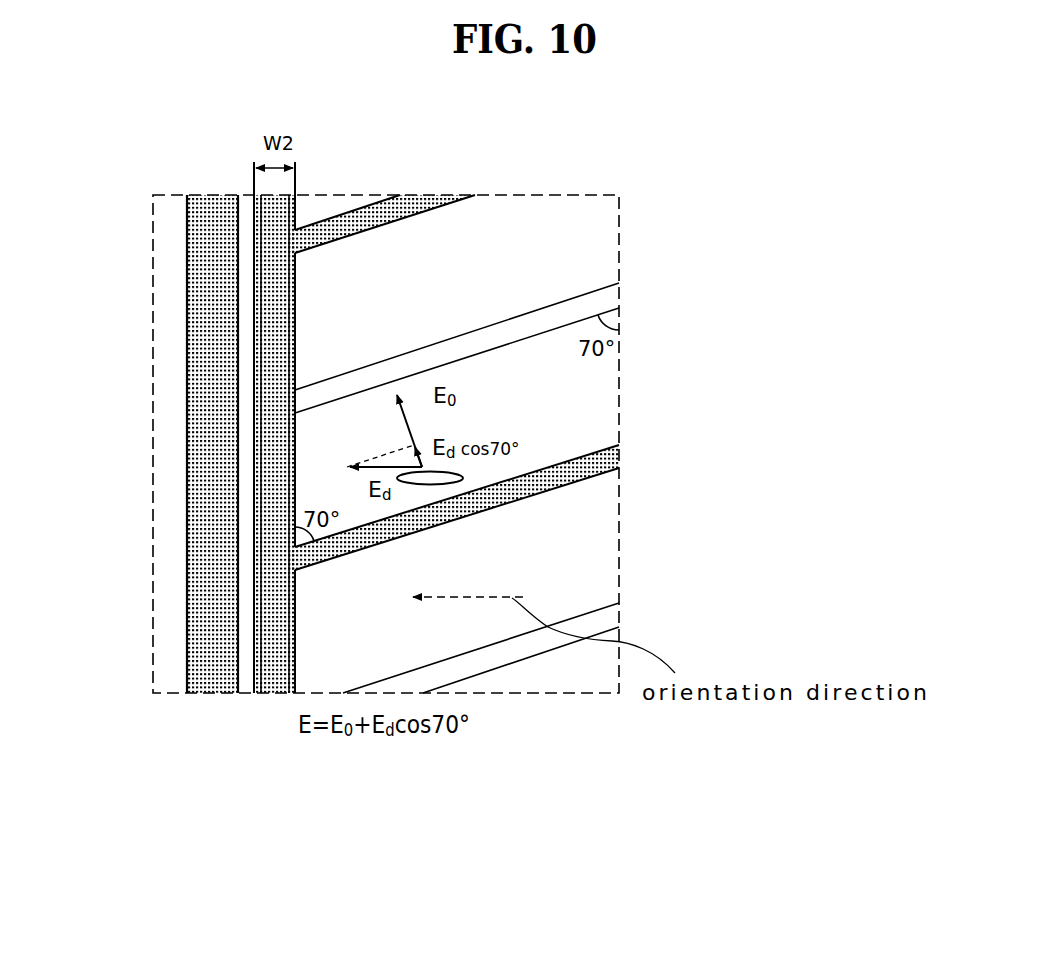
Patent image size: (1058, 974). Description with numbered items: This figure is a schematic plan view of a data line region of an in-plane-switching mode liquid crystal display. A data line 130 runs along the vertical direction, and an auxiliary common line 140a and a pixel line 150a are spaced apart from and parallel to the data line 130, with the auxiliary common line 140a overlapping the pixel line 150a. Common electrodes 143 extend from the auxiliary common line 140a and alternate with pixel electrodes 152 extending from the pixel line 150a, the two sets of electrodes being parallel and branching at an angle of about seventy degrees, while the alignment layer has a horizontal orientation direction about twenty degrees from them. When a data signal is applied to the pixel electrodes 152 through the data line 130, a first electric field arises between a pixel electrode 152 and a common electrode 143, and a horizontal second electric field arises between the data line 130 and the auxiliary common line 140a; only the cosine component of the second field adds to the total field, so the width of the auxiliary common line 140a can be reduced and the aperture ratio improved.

The data line 130 is at (200, 528).
The auxiliary common line 140a is at (292, 697).
The pixel line 150a is at (275, 683).
The common electrode 143 is at (586, 452).
The pixel electrode 152 is at (589, 303).